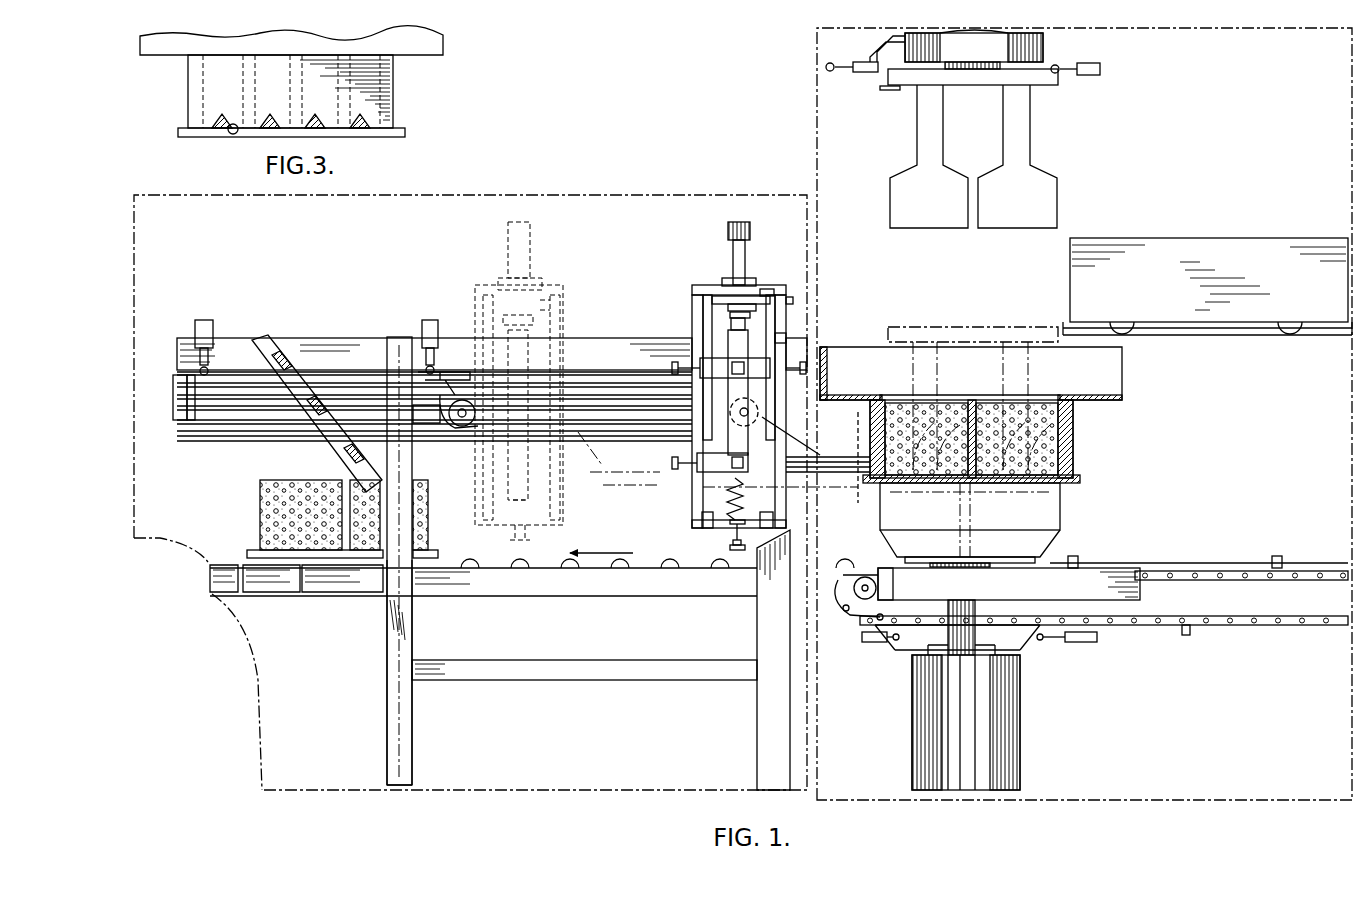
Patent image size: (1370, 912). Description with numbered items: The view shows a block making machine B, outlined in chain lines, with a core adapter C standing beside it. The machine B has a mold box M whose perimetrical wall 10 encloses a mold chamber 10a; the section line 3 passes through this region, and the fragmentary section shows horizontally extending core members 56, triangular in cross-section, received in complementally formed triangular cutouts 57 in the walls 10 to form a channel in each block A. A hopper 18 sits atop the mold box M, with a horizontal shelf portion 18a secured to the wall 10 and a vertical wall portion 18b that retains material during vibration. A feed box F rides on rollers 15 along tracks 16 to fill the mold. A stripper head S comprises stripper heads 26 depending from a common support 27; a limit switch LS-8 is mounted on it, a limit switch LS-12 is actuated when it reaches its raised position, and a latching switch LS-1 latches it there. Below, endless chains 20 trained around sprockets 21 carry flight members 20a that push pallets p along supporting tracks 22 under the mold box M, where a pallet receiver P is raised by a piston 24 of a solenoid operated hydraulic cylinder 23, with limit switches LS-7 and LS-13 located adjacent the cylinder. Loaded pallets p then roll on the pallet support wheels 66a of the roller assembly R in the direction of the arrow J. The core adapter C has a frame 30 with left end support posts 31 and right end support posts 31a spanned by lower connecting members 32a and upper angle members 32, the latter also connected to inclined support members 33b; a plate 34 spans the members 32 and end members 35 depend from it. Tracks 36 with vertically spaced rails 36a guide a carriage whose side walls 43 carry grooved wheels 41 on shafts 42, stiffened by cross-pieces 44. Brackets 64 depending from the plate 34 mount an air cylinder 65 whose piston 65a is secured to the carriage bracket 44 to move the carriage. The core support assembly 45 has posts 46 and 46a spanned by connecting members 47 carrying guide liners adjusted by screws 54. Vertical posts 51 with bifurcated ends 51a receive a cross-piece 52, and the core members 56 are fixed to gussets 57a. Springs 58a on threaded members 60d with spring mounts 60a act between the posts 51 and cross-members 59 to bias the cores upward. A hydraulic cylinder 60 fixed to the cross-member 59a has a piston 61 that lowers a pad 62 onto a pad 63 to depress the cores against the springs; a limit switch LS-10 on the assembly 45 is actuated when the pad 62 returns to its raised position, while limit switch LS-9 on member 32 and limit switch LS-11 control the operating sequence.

In FIG. 3, the block A is at (200, 82).
In FIG. 1, the block A is at (260, 520).
In FIG. 3, the mold box M is at (405, 93).
In FIG. 1, the mold box M is at (1078, 434).
In FIG. 1, the pallet receiving member P is at (1068, 513).
In FIG. 3, the pallet p is at (403, 129).
In FIG. 3, the core members 56 is at (362, 133).
In FIG. 1, the core members 56 is at (796, 474).
In FIG. 3, the triangular cutouts 57 is at (232, 133).
In FIG. 1, the core adapter C is at (550, 203).
In FIG. 1, the block making machine B is at (812, 130).
In FIG. 1, the stripper head S is at (1040, 147).
In FIG. 1, the common support 27 is at (971, 86).
In FIG. 1, the stripper heads 26 is at (1025, 213).
In FIG. 1, the limit switch LS-8 is at (857, 73).
In FIG. 1, the latching switch LS-1 is at (888, 91).
In FIG. 1, the limit switch LS-12 is at (1090, 76).
In FIG. 1, the feed box F is at (1207, 240).
In FIG. 1, the tracks 16 is at (1182, 336).
In FIG. 1, the rollers 15 is at (1290, 336).
In FIG. 1, the hopper 18 is at (866, 336).
In FIG. 1, the shelf portion 18a is at (853, 396).
In FIG. 1, the wall portion 18b is at (829, 362).
In FIG. 1, the perimetrical wall 10 is at (1072, 455).
In FIG. 1, the mold chamber 10a is at (1052, 400).
In FIG. 1, the section line 3 is at (856, 416).
In FIG. 1, the core support assembly 45 is at (475, 282).
In FIG. 1, the hydraulic cylinder 60 is at (731, 250).
In FIG. 1, the piston 61 is at (728, 281).
In FIG. 1, the cross-member 59a is at (768, 290).
In FIG. 1, the limit switch LS-10 is at (795, 299).
In FIG. 1, the pad 62 is at (712, 299).
In FIG. 1, the bifurcated ends 51a is at (728, 307).
In FIG. 1, the pad 63 is at (750, 315).
In FIG. 1, the cross-piece 52 is at (745, 324).
In FIG. 1, the post 46 is at (703, 332).
In FIG. 1, the post 46a is at (786, 338).
In FIG. 1, the side walls 43 is at (700, 408).
In FIG. 1, the connecting members 47 is at (705, 360).
In FIG. 1, the screws 54 is at (670, 368).
In FIG. 1, the wheels 41 is at (758, 410).
In FIG. 1, the gusset 57a is at (800, 432).
In FIG. 1, the posts 51 is at (705, 473).
In FIG. 1, the cross-members 59 is at (700, 537).
In FIG. 1, the spring mounts 60a is at (773, 520).
In FIG. 1, the springs 58a is at (730, 545).
In FIG. 1, the threaded members 60d is at (737, 551).
In FIG. 1, the upper end connecting angle members 32 is at (302, 345).
In FIG. 1, the plate 34 is at (333, 372).
In FIG. 1, the rails 36a is at (232, 395).
In FIG. 1, the air cylinder 65 is at (597, 398).
In FIG. 1, the tracks 36 is at (238, 450).
In FIG. 1, the end members 35 is at (173, 410).
In FIG. 1, the piston 65a is at (413, 412).
In FIG. 1, the support members 33b is at (345, 460).
In FIG. 1, the limit switch LS-11 is at (205, 320).
In FIG. 1, the limit switch LS-9 is at (426, 320).
In FIG. 1, the brackets 64 is at (450, 372).
In FIG. 1, the shaft 42 is at (452, 428).
In FIG. 1, the cross-pieces 44 is at (405, 350).
In FIG. 1, the left end support posts 31 is at (387, 625).
In FIG. 1, the right end support posts 31a is at (757, 630).
In FIG. 1, the roller assembly R is at (555, 600).
In FIG. 1, the pallet support wheels 66a is at (470, 567).
In FIG. 1, the lower end connecting members 32a is at (602, 681).
In FIG. 1, the frame 30 is at (350, 676).
In FIG. 1, the arrow J is at (606, 552).
In FIG. 1, the supporting tracks 22 is at (1100, 568).
In FIG. 1, the sprockets 21 is at (893, 585).
In FIG. 1, the endless chains 20 is at (1240, 626).
In FIG. 1, the flight members 20a is at (1073, 556).
In FIG. 1, the piston 24 is at (948, 632).
In FIG. 1, the hydraulic cylinder 23 is at (1013, 722).
In FIG. 1, the limit switch LS-7 is at (868, 642).
In FIG. 1, the limit switch LS-13 is at (1077, 642).